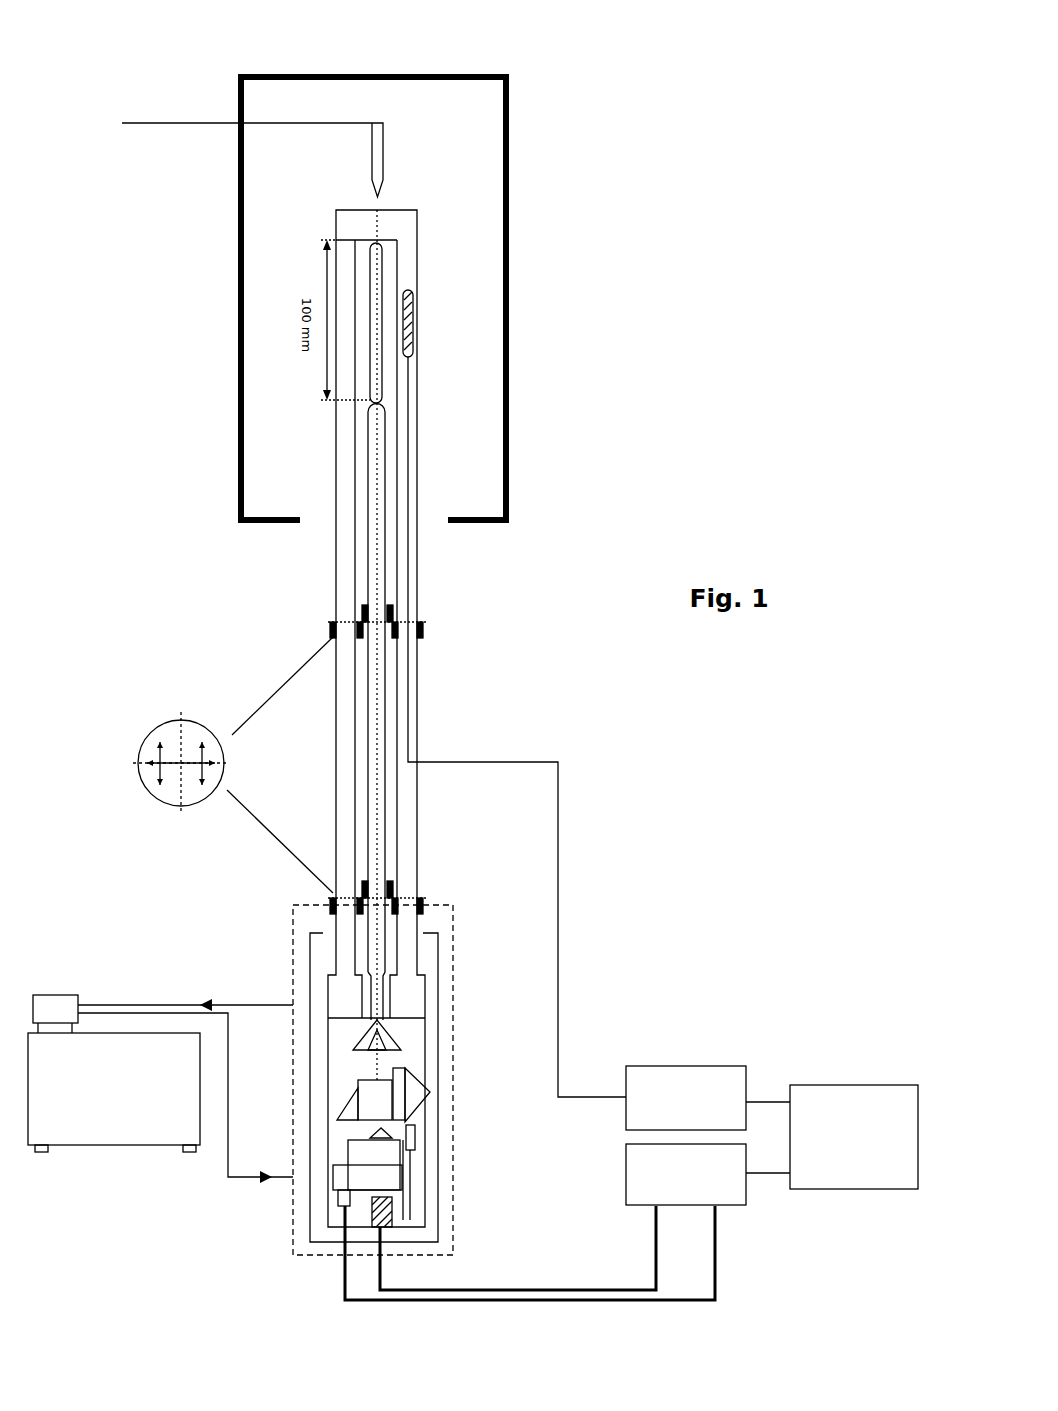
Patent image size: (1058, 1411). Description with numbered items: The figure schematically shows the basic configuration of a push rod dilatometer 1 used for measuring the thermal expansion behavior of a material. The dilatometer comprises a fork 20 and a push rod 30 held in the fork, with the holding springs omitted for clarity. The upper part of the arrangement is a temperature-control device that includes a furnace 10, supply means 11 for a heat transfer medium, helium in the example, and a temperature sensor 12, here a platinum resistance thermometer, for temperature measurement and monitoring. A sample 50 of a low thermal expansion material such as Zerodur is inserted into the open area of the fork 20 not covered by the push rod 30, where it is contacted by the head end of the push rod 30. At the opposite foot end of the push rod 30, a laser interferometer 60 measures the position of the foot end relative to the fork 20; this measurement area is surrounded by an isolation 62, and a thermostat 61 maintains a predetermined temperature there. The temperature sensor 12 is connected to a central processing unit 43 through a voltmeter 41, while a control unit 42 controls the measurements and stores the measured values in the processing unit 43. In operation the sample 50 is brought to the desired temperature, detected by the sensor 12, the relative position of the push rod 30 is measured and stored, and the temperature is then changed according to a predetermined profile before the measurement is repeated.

The push rod dilatometer 1 is at (406, 192).
The furnace 10 is at (240, 377).
The supply means 11 is at (227, 155).
The temperature sensor 12 is at (411, 326).
The fork 20 is at (392, 228).
The push rod 30 is at (370, 695).
The voltmeter 41 is at (690, 1066).
The control unit 42 is at (730, 1207).
The central processing unit 43 is at (848, 1083).
The sample 50 is at (378, 278).
The laser interferometer 60 is at (380, 1117).
The thermostat 61 is at (131, 1145).
The isolation 62 is at (455, 1022).